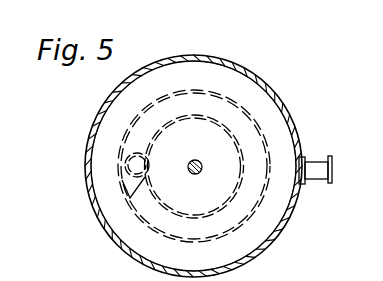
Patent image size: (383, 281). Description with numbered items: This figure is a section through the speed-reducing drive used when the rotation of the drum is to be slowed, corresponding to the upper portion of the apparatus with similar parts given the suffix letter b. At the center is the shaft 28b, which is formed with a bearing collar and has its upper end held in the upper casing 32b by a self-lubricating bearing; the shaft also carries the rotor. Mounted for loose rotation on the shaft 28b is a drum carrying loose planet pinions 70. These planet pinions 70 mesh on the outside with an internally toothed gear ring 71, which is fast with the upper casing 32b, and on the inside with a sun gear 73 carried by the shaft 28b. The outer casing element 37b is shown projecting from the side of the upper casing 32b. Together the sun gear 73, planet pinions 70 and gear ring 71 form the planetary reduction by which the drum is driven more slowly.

The upper casing 32b is at (260, 79).
The internally toothed gear ring 71 is at (275, 127).
The sun gear 73 is at (226, 181).
The shaft 28b is at (196, 160).
The loose planet pinions 70 is at (138, 172).
The nozzle fitting 37b is at (315, 163).